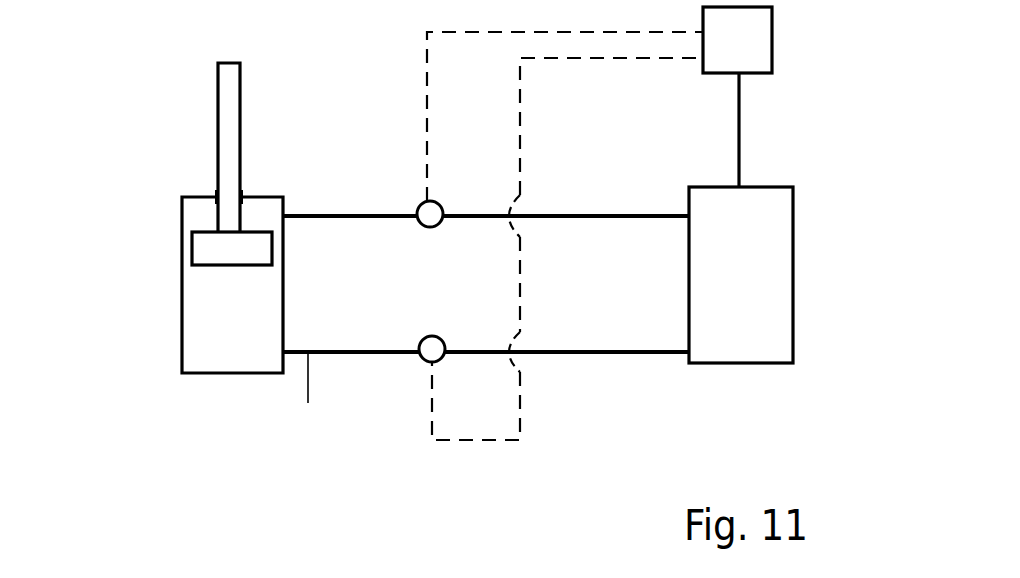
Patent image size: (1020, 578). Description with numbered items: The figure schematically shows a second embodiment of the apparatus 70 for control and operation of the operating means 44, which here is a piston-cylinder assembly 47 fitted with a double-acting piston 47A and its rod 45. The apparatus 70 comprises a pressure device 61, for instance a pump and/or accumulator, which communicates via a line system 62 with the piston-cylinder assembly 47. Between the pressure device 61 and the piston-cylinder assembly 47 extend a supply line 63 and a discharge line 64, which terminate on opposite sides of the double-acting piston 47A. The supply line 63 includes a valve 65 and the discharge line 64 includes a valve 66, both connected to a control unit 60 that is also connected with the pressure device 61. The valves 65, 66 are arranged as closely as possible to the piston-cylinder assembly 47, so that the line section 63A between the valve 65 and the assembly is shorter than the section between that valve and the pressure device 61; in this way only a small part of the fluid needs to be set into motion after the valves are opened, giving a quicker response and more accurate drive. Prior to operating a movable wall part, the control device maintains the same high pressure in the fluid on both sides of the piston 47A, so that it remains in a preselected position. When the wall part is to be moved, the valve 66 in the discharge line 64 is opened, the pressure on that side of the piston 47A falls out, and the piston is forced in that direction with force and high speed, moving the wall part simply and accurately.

The operating means 44 is at (195, 393).
The piston rod 45 is at (228, 146).
The piston-cylinder assembly 47 is at (182, 338).
The double-acting piston 47A is at (207, 250).
The control unit 60 is at (757, 40).
The pressure device 61 is at (778, 275).
The line system 62 is at (586, 354).
The supply line 63 is at (645, 352).
The line section 63A is at (311, 396).
The discharge line 64 is at (641, 216).
The valve 65 is at (421, 362).
The valve 66 is at (417, 204).
The apparatus 70 is at (780, 160).